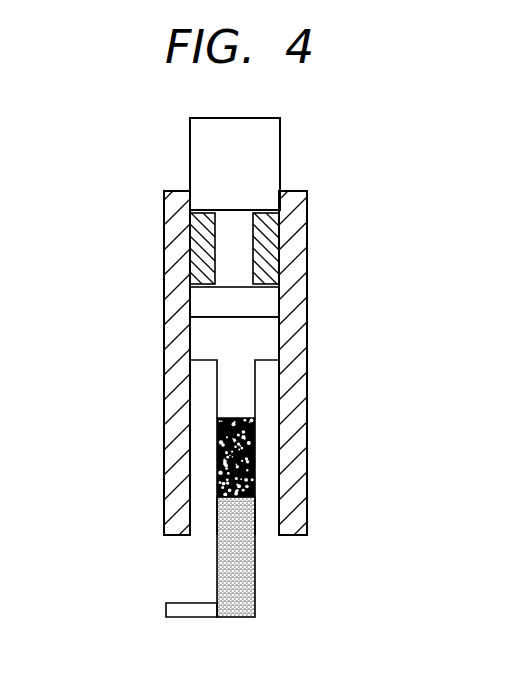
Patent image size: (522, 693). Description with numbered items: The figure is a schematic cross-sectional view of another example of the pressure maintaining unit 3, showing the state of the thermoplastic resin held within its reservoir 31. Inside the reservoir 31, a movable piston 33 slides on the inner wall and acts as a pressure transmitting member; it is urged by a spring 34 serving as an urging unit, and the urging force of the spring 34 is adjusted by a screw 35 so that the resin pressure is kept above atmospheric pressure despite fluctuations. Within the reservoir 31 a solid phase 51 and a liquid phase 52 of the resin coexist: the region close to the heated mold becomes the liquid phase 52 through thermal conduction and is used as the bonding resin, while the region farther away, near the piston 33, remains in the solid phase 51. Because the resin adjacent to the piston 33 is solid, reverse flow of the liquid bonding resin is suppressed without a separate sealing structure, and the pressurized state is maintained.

The pressure maintaining unit 3 is at (308, 333).
The reservoir 31 is at (255, 462).
The movable piston 33 is at (228, 343).
The spring 34 is at (208, 250).
The screw 35 is at (257, 153).
The solid phase 51 is at (217, 458).
The liquid phase 52 is at (255, 585).